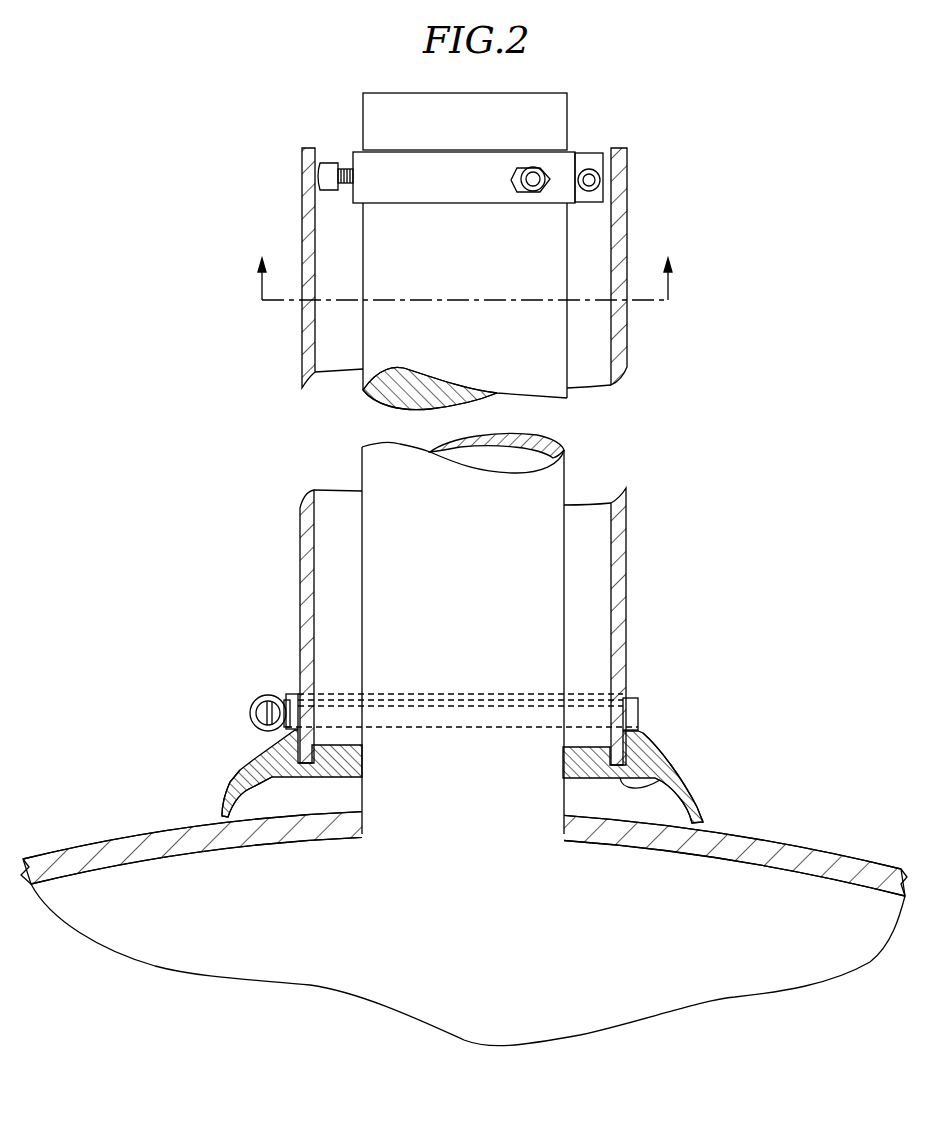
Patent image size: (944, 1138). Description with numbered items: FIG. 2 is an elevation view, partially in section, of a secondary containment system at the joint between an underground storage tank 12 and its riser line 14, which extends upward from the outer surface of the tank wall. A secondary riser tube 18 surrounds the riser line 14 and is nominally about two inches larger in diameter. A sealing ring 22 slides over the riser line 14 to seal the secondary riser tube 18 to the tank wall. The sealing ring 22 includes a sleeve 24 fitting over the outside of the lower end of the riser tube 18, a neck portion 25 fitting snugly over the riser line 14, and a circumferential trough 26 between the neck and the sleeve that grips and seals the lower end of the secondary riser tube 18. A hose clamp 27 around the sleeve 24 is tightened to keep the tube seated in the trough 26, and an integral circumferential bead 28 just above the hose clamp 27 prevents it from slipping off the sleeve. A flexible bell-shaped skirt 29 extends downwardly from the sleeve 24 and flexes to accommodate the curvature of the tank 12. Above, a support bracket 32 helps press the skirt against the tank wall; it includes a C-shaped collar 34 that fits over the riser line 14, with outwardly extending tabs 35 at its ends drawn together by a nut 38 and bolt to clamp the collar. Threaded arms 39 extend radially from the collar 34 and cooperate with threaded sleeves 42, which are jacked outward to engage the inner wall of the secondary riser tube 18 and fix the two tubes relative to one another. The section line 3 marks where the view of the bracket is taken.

The section line 3- 3 is at (468, 278).
The underground storage tank 12 is at (770, 852).
The riser line 14 is at (543, 370).
The secondary riser tube 18 is at (305, 337).
The sealing ring 22 is at (462, 776).
The sleeve 24 is at (638, 722).
The neck portion 25 is at (332, 760).
The circumferential trough 26 is at (647, 783).
The hose clamp 27 is at (250, 713).
The circumferential bead 28 is at (286, 694).
The bell-shaped skirt 29 is at (232, 782).
The support bracket 32 is at (463, 161).
The C-shaped collar 34 is at (425, 184).
The outwardly extending tabs 35 is at (585, 210).
The nut 38 is at (600, 171).
The threaded arms 39 is at (345, 170).
The threaded sleeves 42 is at (325, 178).